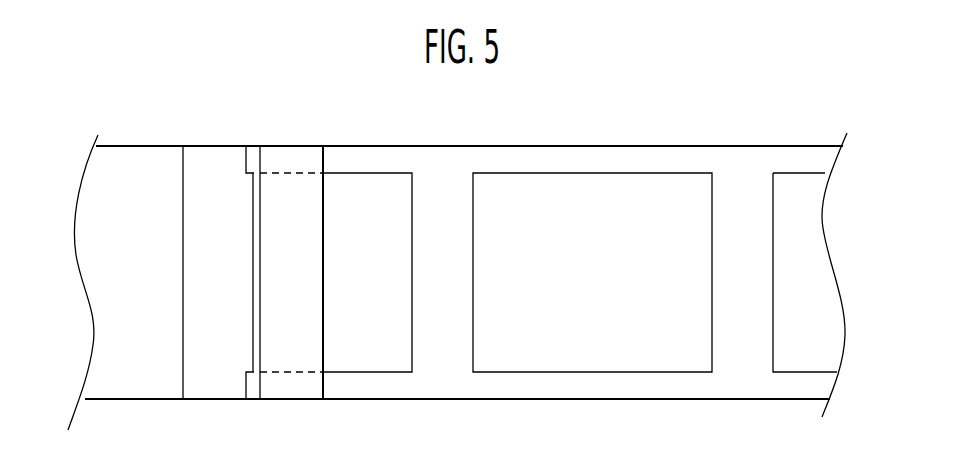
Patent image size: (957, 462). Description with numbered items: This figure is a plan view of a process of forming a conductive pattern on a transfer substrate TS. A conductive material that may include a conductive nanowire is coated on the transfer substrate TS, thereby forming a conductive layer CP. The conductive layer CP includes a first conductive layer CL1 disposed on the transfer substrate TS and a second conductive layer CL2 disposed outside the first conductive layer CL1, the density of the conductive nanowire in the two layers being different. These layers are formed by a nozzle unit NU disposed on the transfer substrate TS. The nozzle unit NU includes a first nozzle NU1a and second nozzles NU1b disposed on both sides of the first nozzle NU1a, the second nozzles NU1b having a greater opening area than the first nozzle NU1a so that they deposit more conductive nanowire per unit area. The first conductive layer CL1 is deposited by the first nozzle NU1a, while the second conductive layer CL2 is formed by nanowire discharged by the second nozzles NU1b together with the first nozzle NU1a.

The transfer substrate TS is at (88, 268).
The nozzle unit NU is at (308, 152).
The first nozzle NU1a is at (257, 310).
The second nozzles NU1b is at (253, 156).
The conductive layer CP is at (670, 103).
The first conductive layer CL1 is at (648, 197).
The second conductive layer CL2 is at (585, 158).